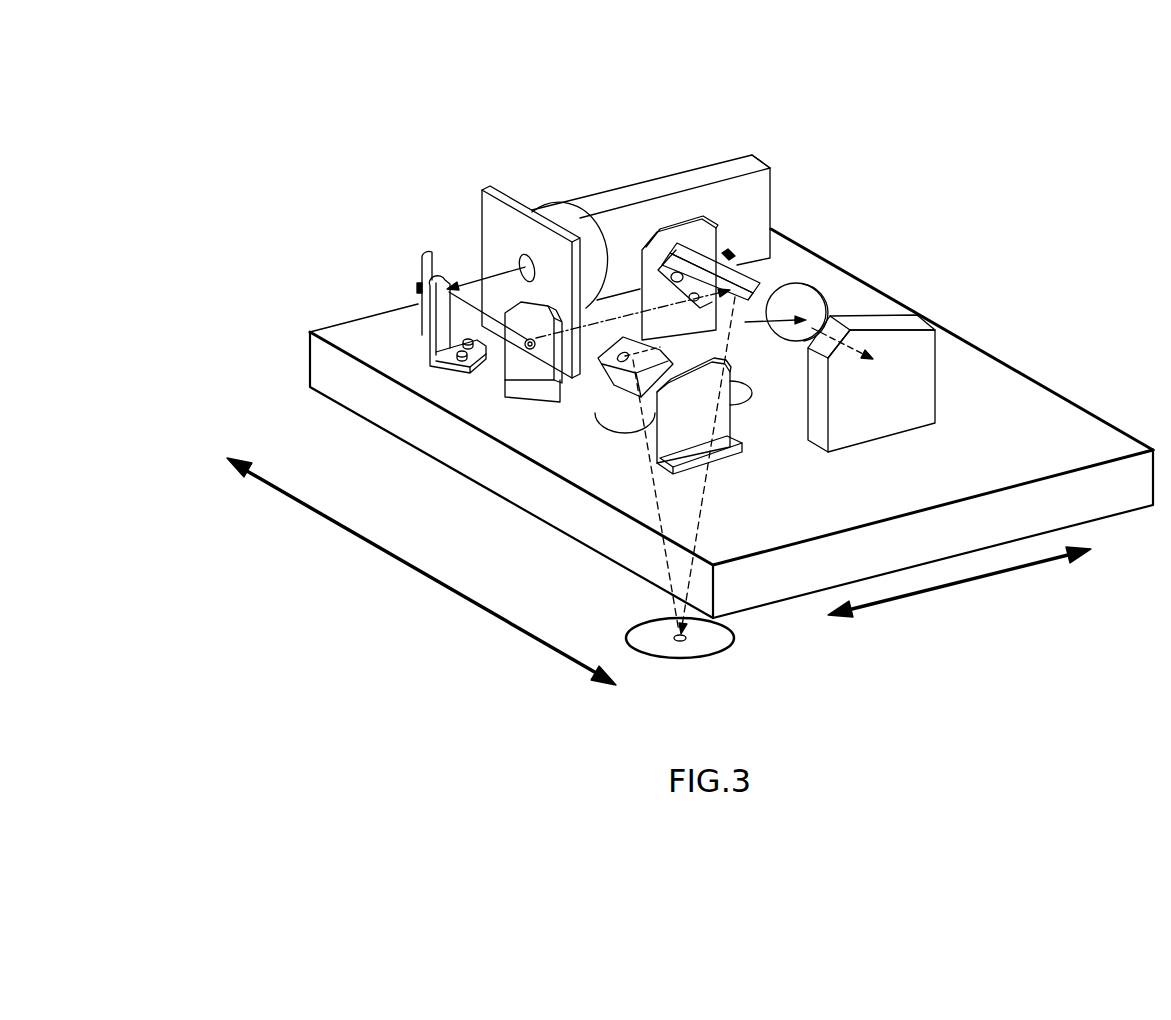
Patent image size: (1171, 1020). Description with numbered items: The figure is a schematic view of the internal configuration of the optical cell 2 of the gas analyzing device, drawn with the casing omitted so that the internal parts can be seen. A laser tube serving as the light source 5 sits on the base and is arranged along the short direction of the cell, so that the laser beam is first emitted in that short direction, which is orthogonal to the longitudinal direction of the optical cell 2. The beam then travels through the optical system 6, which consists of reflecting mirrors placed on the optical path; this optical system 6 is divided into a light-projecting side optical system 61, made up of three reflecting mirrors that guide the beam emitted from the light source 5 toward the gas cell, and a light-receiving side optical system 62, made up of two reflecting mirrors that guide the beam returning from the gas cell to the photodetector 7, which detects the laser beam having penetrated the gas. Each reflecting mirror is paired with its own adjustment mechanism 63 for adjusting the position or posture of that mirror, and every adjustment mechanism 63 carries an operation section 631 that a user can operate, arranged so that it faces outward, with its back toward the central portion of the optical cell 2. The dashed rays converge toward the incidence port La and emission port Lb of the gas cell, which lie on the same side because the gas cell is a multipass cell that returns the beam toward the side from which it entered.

The optical cell 2 is at (298, 128).
The light source 5 is at (737, 172).
The optical system 6 is at (615, 389).
The light-projecting side optical system 61 is at (440, 354).
The light-receiving side optical system 62 is at (604, 422).
The adjustment mechanism 63 is at (422, 246).
The operation section 631 is at (418, 288).
The photodetector 7 is at (888, 388).
The incidence port La is at (660, 490).
The emission port Lb is at (680, 642).